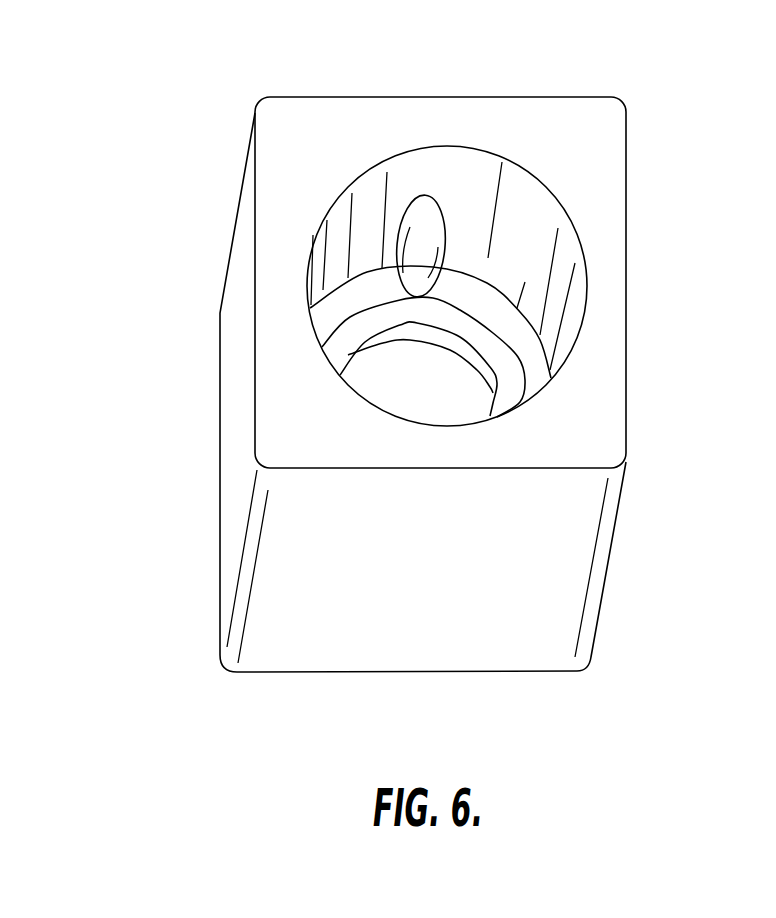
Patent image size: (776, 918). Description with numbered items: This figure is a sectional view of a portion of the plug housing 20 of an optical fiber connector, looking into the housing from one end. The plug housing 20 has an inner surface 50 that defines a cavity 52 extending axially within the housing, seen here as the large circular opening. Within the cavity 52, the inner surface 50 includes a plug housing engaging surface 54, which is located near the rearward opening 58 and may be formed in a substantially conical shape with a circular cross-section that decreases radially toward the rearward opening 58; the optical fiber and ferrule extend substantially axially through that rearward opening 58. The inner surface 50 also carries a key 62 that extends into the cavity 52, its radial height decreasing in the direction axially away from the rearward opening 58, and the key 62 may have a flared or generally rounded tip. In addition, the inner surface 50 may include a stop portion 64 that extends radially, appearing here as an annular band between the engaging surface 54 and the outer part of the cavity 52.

The plug housing 20 is at (237, 382).
The inner surface 50 is at (487, 218).
The cavity 52 is at (535, 268).
The plug housing engaging surface 54 is at (500, 372).
The rearward opening 58 is at (445, 401).
The key 62 is at (430, 213).
The stop portion 64 is at (503, 318).